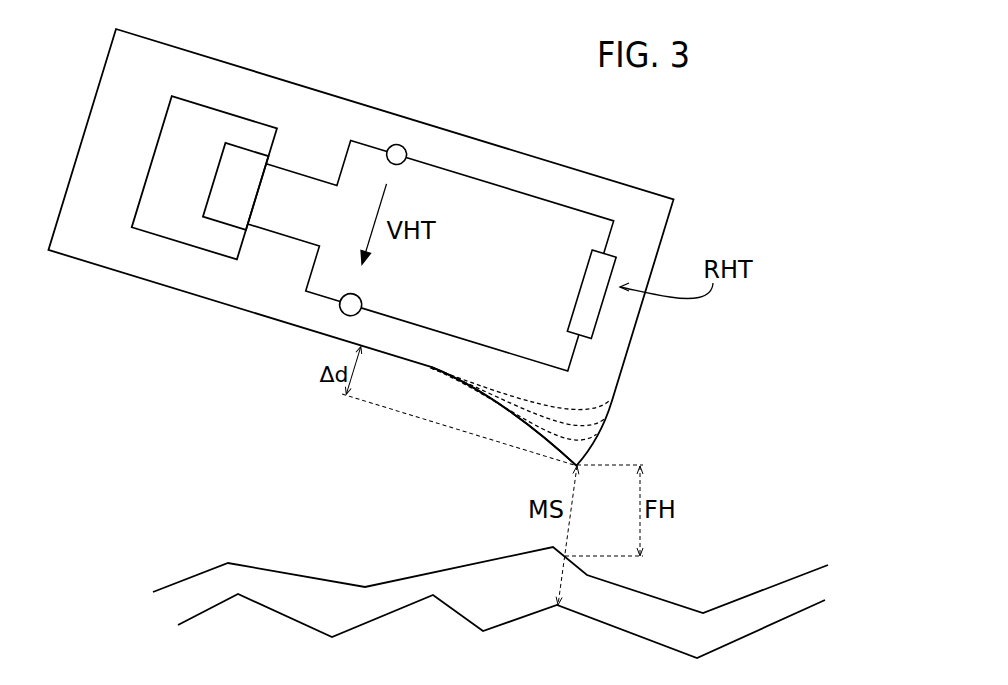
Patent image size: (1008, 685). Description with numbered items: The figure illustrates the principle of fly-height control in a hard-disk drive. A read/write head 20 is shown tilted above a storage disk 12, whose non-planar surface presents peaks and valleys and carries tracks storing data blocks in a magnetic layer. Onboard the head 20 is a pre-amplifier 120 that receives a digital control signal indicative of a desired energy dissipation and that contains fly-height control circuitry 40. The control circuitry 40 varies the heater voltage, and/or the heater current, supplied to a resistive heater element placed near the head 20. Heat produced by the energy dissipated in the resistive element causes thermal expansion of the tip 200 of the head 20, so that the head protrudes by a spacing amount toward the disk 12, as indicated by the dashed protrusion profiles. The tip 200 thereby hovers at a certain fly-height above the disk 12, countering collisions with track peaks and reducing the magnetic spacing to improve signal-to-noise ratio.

The read/write head 20 is at (323, 90).
The pre-amplifier 120 is at (153, 157).
The fly-height control circuitry 40 is at (222, 163).
The tip 200 is at (620, 427).
The storage disk 12 is at (750, 587).